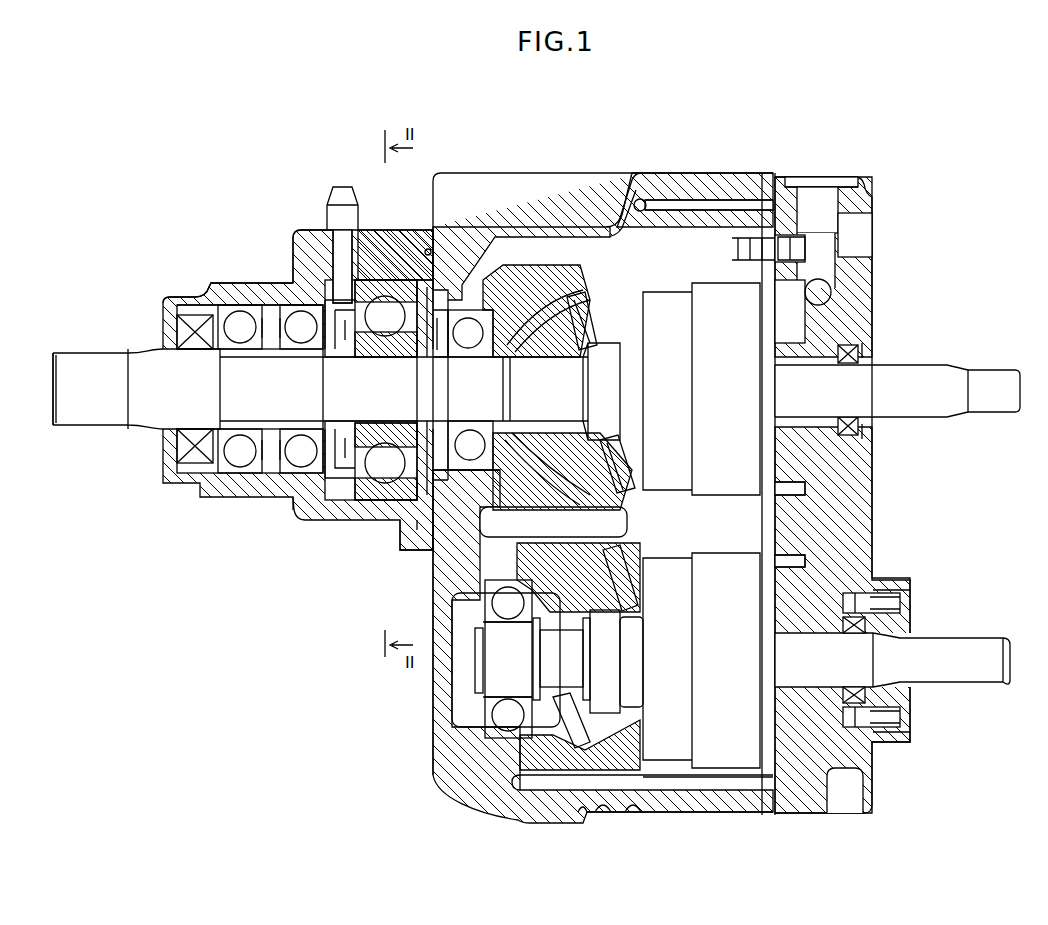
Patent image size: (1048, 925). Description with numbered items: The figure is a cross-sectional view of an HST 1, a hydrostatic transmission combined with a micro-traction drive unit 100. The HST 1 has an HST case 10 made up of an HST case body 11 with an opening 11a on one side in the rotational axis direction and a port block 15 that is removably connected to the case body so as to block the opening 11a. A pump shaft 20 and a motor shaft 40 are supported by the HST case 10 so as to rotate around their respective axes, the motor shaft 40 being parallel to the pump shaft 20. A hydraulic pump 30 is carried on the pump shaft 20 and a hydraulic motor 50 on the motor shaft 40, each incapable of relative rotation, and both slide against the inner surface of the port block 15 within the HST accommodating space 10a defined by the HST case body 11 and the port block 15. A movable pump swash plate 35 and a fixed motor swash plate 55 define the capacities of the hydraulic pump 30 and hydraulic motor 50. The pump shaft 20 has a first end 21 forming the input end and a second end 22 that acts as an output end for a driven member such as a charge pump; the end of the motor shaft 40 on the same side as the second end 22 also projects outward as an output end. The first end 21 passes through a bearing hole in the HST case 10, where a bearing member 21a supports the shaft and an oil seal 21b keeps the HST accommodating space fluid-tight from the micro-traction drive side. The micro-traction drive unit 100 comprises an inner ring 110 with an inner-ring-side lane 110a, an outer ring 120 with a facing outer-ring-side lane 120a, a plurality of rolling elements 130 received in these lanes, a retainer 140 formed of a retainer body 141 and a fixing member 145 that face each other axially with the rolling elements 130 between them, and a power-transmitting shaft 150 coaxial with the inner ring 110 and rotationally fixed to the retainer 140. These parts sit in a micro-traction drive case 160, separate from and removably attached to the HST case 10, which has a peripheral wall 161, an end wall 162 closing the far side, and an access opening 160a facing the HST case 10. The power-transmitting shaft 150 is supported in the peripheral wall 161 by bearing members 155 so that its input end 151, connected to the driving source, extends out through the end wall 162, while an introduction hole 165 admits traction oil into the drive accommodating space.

The HST 1 is at (942, 189).
The HST case 10 is at (780, 159).
The HST accommodating space 10a is at (573, 500).
The HST case body 11 is at (719, 818).
The opening 11a is at (756, 790).
The port block 15 is at (836, 820).
The pump shaft 20 is at (793, 367).
The first end 21 is at (278, 409).
The bearing member 21a is at (468, 332).
The oil seal 21b is at (444, 330).
The second end 22 is at (897, 391).
The hydraulic pump 30 is at (655, 256).
The pump swash plate 35 is at (540, 267).
The motor shaft 40 is at (820, 643).
The hydraulic motor 50 is at (666, 785).
The motor swash plate 55 is at (568, 747).
The micro-traction drive unit 100 is at (296, 172).
The inner ring 110 is at (325, 492).
The inner-ring-side lane 110a is at (342, 465).
The outer ring 120 is at (380, 288).
The outer-ring-side lane 120a is at (420, 482).
The rolling elements 130 is at (372, 442).
The retainer 140 is at (318, 300).
The retainer body 141 is at (345, 468).
The fixing member 145 is at (423, 470).
The power-transmitting shaft 150 is at (150, 413).
The input end 151 is at (73, 410).
The bearing members 155 is at (300, 457).
The micro-traction drive case 160 is at (214, 268).
The access opening 160a is at (410, 304).
The peripheral wall 161 is at (240, 296).
The end wall 162 is at (165, 329).
The introduction hole 165 is at (303, 262).